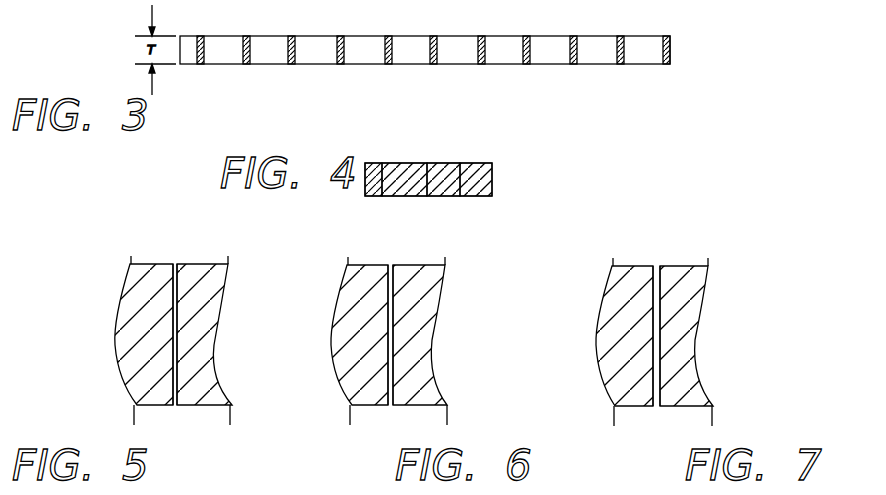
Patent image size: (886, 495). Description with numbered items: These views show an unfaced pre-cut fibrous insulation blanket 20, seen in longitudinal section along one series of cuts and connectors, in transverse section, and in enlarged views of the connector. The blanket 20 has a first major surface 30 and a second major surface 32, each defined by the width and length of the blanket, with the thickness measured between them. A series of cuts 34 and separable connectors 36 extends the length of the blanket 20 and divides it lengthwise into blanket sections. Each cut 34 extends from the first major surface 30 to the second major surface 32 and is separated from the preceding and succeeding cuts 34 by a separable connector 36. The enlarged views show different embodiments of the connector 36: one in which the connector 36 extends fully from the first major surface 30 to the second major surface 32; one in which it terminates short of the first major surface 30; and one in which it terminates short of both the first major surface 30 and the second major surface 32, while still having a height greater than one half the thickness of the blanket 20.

In FIG. 3, the pre-cut fibrous insulation blanket 20 is at (684, 36).
In FIG. 3, the first major surface 30 is at (455, 36).
In FIG. 4, the first major surface 30 is at (406, 163).
In FIG. 5, the first major surface 30 is at (143, 264).
In FIG. 6, the first major surface 30 is at (366, 265).
In FIG. 7, the first major surface 30 is at (640, 266).
In FIG. 3, the second major surface 32 is at (495, 65).
In FIG. 4, the second major surface 32 is at (445, 196).
In FIG. 5, the second major surface 32 is at (200, 406).
In FIG. 6, the second major surface 32 is at (370, 406).
In FIG. 7, the second major surface 32 is at (635, 407).
In FIG. 3, the cuts 34 is at (223, 48).
In FIG. 4, the cuts 34 is at (378, 163).
In FIG. 5, the cuts 34 is at (180, 366).
In FIG. 6, the cuts 34 is at (398, 366).
In FIG. 7, the cuts 34 is at (666, 366).
In FIG. 3, the separable connectors 36 is at (246, 64).
In FIG. 4, the separable connectors 36 is at (402, 197).
In FIG. 5, the separable connectors 36 is at (177, 264).
In FIG. 6, the separable connectors 36 is at (393, 265).
In FIG. 7, the separable connectors 36 is at (657, 270).